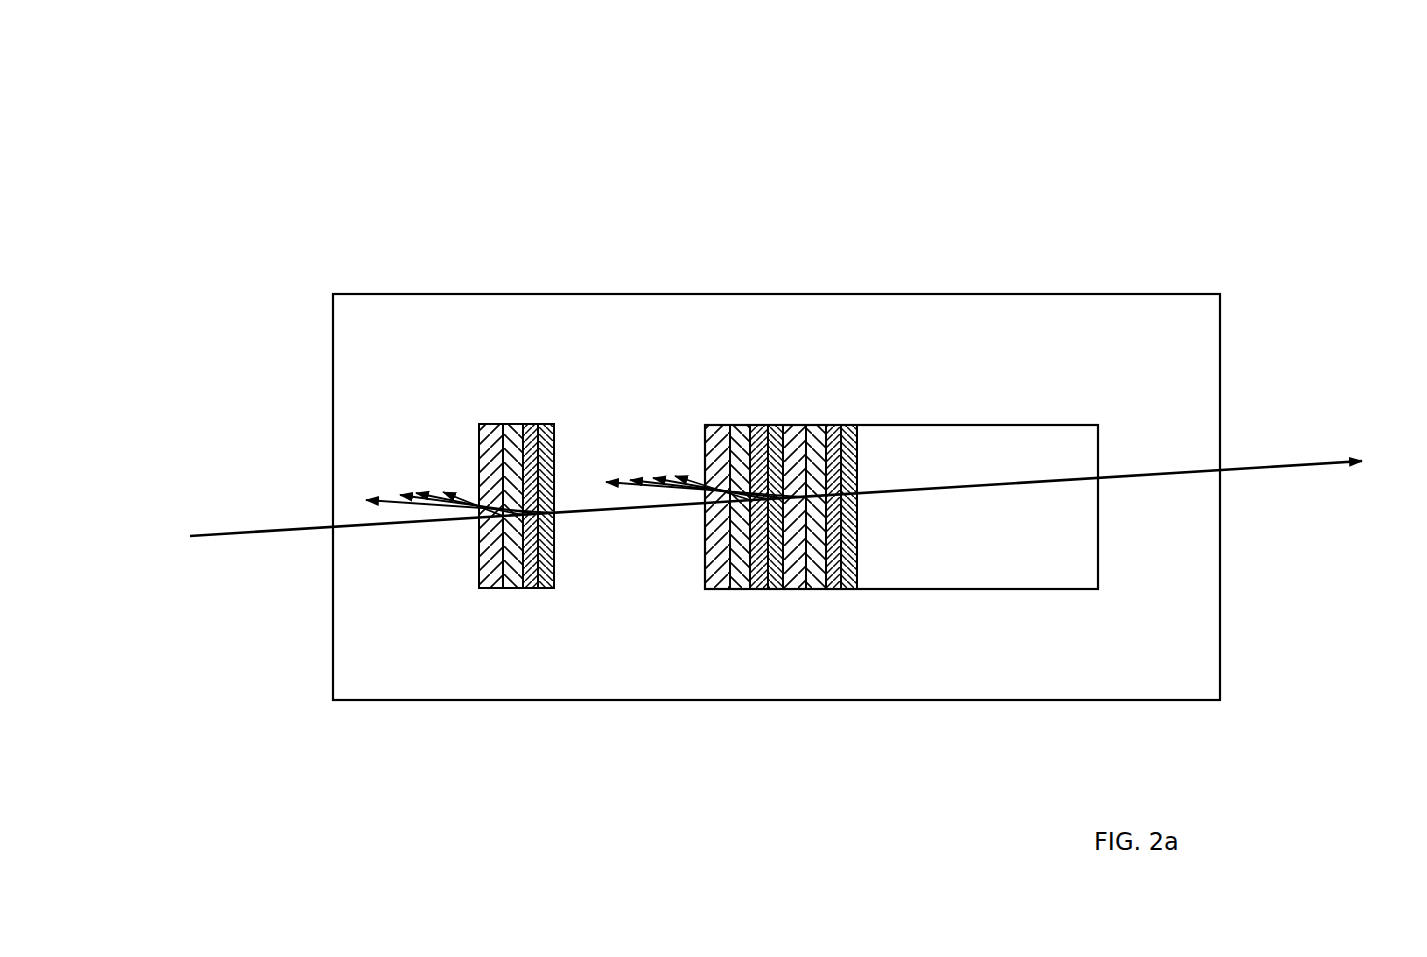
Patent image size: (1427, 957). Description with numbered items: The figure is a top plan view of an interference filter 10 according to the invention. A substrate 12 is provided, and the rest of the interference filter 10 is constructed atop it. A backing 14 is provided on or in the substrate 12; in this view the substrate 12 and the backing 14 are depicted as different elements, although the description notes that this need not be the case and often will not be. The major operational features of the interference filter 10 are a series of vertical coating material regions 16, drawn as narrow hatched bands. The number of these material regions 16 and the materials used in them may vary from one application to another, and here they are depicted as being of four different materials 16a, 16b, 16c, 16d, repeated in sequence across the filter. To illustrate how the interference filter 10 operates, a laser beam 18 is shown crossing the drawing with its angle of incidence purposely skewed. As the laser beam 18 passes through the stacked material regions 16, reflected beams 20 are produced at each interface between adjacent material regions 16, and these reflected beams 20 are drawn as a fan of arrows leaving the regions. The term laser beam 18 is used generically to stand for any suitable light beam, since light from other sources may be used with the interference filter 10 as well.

The interference filter 10 is at (1303, 125).
The substrate 12 is at (1158, 336).
The backing 14 is at (976, 456).
The vertical coating material regions 16 is at (567, 603).
The first material 16a is at (488, 589).
The second material 16b is at (512, 589).
The third material 16c is at (532, 589).
The fourth material 16d is at (545, 589).
The laser beam 18 is at (222, 532).
The reflected beams 20 is at (630, 461).